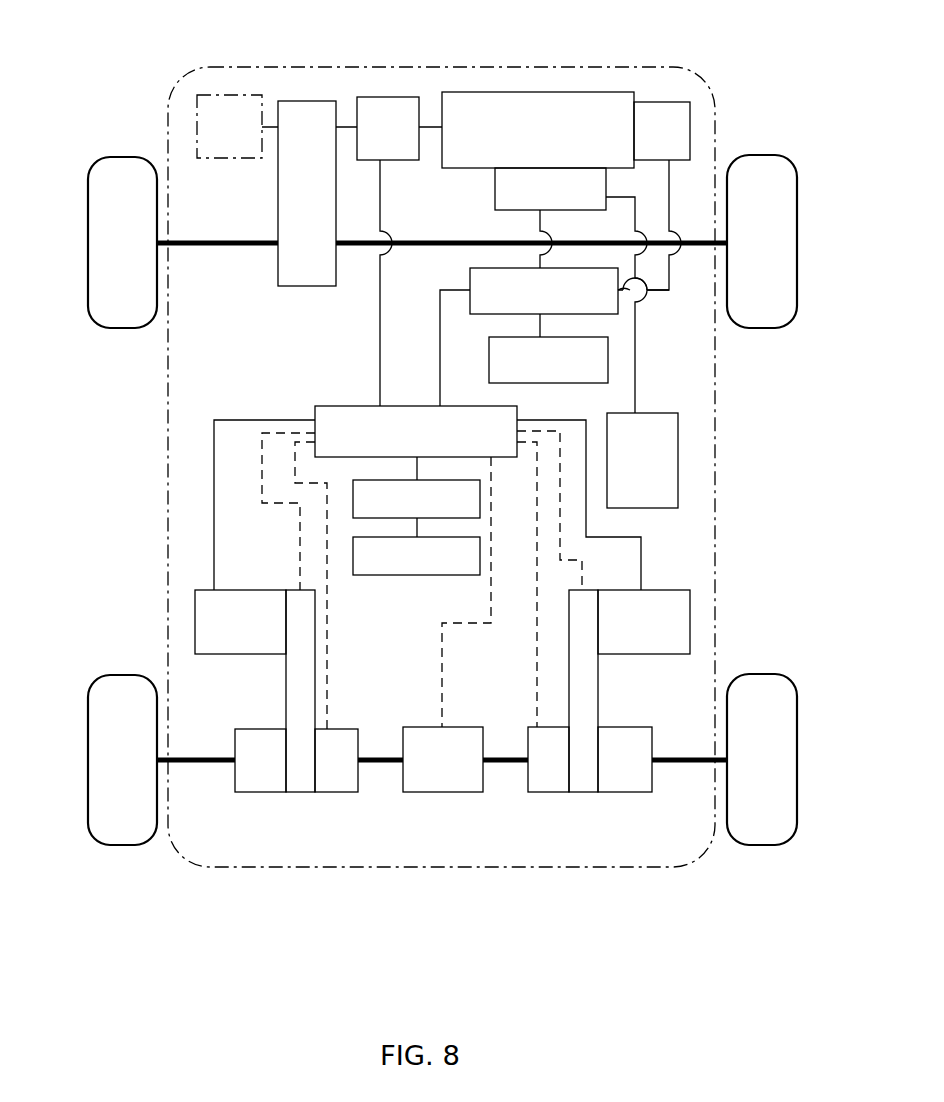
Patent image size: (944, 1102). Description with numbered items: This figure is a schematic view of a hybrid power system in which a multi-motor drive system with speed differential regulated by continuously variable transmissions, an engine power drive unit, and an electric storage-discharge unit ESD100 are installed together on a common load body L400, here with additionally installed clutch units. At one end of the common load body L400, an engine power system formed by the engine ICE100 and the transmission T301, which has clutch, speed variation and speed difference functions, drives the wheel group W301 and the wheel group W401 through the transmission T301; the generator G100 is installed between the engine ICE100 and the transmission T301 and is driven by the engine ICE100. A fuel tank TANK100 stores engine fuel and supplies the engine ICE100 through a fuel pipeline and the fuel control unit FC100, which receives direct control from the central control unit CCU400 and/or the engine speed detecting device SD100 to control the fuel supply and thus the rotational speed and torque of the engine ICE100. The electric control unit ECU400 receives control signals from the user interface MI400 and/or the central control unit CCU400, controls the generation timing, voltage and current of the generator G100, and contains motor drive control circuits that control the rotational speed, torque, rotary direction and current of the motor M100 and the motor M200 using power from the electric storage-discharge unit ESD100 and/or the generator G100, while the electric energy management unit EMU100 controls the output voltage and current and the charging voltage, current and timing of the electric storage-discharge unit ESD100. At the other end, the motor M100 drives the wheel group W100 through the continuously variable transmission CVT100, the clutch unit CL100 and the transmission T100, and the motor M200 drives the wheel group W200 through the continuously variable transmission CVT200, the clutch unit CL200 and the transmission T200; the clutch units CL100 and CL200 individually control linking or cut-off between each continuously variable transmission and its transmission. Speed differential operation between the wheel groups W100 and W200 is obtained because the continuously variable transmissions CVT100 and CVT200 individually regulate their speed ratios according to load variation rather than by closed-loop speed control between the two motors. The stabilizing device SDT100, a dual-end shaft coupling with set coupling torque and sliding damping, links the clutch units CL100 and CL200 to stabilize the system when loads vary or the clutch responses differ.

The common load body L400 is at (168, 478).
The wheel group W301 is at (107, 265).
The wheel group W401 is at (782, 262).
The wheel group W100 is at (107, 785).
The wheel group W200 is at (797, 780).
The generator G100 is at (223, 128).
The transmission T301 is at (290, 272).
The engine ICE100 is at (538, 130).
The engine speed detecting device SD100 is at (655, 130).
The fuel control unit FC100 is at (571, 290).
The central control unit CCU400 is at (554, 337).
The user interface MI400 is at (548, 360).
The fuel tank TANK100 is at (652, 458).
The electric control unit ECU400 is at (427, 444).
The electric energy management unit EMU100 is at (416, 499).
The electric storage-discharge unit ESD100 is at (416, 556).
The motor M100 is at (240, 622).
The continuously variable transmission CVT100 is at (295, 717).
The transmission T100 is at (252, 784).
The clutch unit CL100 is at (328, 772).
The stabilizing device SDT100 is at (430, 774).
The clutch unit CL200 is at (555, 773).
The continuously variable transmission CVT200 is at (588, 717).
The motor M200 is at (644, 622).
The transmission T200 is at (630, 786).